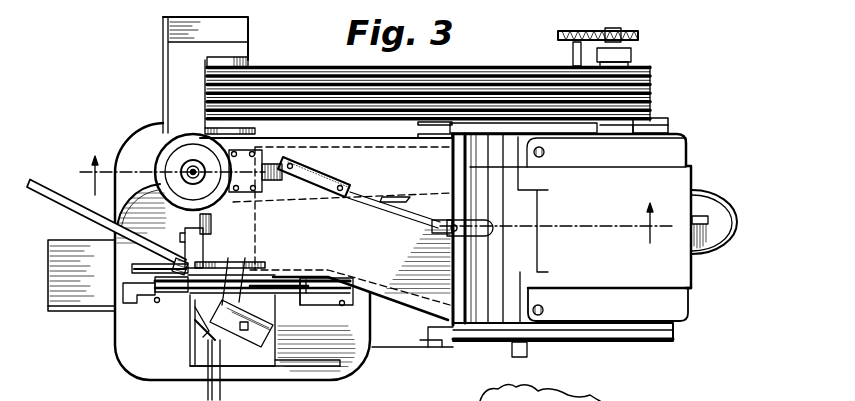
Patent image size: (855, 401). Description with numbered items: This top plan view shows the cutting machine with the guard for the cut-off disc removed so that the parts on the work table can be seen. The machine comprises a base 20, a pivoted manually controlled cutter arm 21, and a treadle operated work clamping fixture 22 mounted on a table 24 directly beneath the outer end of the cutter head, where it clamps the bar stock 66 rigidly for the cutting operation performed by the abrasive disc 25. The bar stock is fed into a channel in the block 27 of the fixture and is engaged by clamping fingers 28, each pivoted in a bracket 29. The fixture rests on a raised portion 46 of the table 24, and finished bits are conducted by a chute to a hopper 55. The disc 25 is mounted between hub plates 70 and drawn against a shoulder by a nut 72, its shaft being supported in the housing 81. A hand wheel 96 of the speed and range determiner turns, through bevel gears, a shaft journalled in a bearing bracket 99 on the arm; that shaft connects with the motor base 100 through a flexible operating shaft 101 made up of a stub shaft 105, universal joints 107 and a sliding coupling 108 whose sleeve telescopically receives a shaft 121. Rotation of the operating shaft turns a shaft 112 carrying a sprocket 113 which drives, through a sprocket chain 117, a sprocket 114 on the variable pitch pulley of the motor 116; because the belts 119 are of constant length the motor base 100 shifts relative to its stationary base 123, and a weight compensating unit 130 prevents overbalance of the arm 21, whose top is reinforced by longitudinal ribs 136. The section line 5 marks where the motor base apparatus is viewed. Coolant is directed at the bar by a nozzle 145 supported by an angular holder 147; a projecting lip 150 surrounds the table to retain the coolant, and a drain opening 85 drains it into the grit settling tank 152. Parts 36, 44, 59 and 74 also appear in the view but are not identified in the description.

The hopper 55 is at (176, 65).
The connecting block 74 is at (207, 60).
The belts 119 is at (490, 83).
The shaft 112 is at (573, 51).
The sprocket 113 is at (580, 30).
The sprocket 114 is at (615, 28).
The sprocket chain 117 is at (635, 34).
The motor base 100 is at (531, 248).
The motor 116 is at (666, 176).
The weight compensating unit 130 is at (729, 190).
The stationary base 123 is at (473, 203).
The section line 5- 5 is at (374, 201).
The hand wheel 96 is at (166, 156).
The bearing bracket 99 is at (246, 199).
The stub shaft 105 is at (283, 181).
The flexible operating shaft 101 is at (334, 174).
The shaft 121 is at (365, 196).
The sliding coupling 108 is at (404, 197).
The universal joints 107 is at (437, 200).
The longitudinal ribs 136 is at (349, 180).
The bar stock 66 is at (43, 177).
The side box 36 is at (48, 288).
The bracket 44 is at (131, 271).
The table 24 is at (120, 328).
The projecting lip 150 is at (151, 381).
The housing 81 is at (200, 221).
The hub plates 70 is at (228, 261).
The nut 72 is at (248, 271).
The block 27 is at (200, 297).
The angular holder 147 is at (136, 296).
The nozzle 145 is at (158, 304).
The work clamping fixture 22 is at (200, 345).
The bracket 29 is at (236, 316).
The clamping fingers 28 is at (215, 323).
The abrasive disc 25 is at (289, 280).
The block 59 is at (278, 313).
The drain opening 85 is at (340, 305).
The cutter arm 21 is at (400, 302).
The base 20 is at (403, 345).
The grit settling tank 152 is at (430, 348).
The raised portion 46 is at (284, 380).